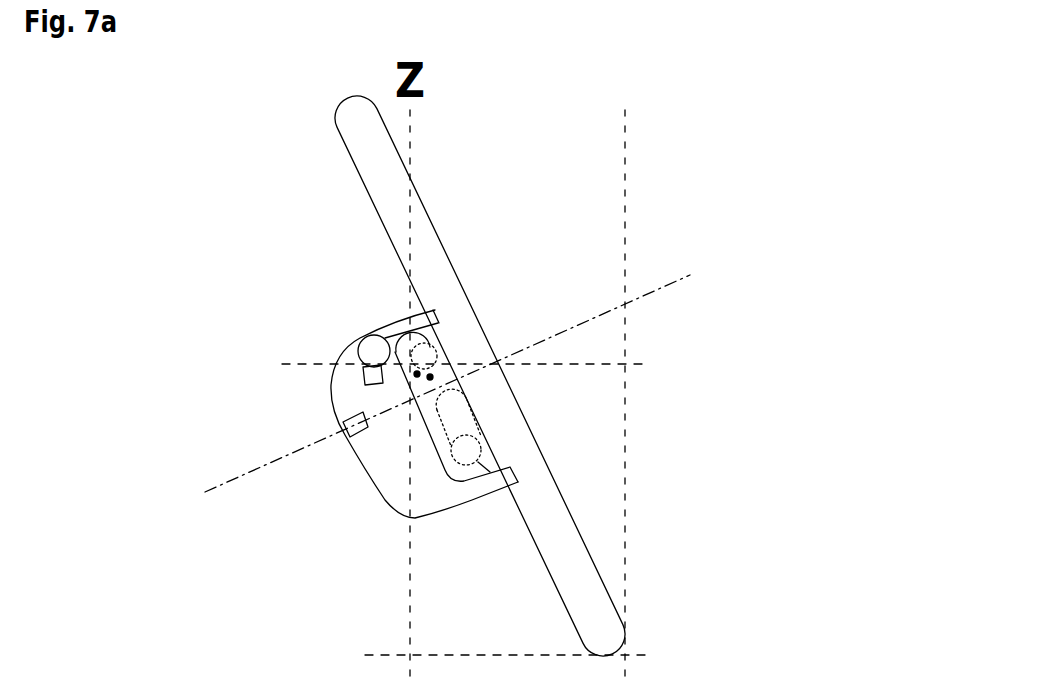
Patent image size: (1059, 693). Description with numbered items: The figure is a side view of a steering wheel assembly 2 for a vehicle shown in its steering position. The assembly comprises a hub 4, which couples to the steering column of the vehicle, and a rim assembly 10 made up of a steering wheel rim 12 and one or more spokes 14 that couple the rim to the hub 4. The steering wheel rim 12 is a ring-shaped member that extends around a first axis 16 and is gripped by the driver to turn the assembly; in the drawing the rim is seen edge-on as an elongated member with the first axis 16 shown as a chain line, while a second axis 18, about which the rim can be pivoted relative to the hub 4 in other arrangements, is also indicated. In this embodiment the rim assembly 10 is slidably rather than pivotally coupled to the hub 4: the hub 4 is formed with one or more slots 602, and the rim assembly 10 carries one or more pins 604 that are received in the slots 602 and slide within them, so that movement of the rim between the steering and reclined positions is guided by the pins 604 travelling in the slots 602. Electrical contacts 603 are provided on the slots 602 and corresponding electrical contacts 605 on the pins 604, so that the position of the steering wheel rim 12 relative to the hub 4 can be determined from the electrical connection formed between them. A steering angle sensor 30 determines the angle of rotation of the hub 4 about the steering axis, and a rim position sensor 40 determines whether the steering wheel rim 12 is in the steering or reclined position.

The steering wheel assembly 2 is at (533, 87).
The hub 4 is at (382, 495).
The rim assembly 10 is at (672, 527).
The steering wheel rim 12 is at (609, 592).
The spokes 14 is at (470, 484).
The first axis 16 is at (672, 284).
The second axis 18 is at (410, 403).
The steering angle sensor 30 is at (347, 423).
The rim position sensor 40 is at (316, 348).
The slots 602 is at (385, 338).
The electrical contacts 603 is at (362, 382).
The pins 604 is at (441, 311).
The corresponding electrical contacts 605 is at (432, 376).